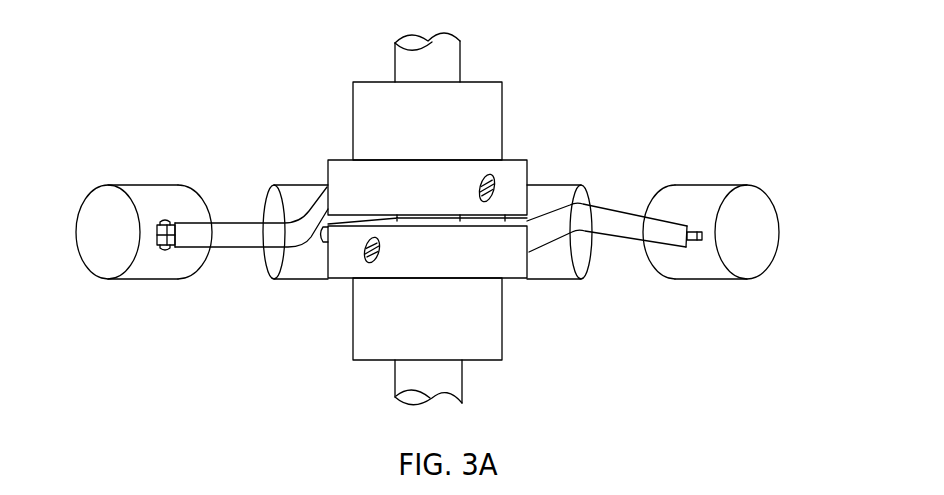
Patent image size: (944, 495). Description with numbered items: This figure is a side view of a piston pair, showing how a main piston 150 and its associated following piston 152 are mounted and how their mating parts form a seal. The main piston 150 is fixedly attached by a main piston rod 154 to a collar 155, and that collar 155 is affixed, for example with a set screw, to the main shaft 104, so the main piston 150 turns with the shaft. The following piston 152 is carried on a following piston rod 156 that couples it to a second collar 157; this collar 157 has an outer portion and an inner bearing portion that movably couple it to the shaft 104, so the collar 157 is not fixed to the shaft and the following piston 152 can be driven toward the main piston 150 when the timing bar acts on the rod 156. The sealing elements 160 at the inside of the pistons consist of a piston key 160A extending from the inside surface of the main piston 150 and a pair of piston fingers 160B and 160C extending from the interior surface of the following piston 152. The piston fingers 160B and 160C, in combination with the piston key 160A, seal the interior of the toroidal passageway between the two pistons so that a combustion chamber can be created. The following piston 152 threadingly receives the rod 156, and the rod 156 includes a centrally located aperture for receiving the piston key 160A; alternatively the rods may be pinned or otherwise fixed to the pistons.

The main shaft 104 is at (482, 41).
The main piston 150 is at (135, 188).
The following piston 152 is at (295, 185).
The main piston rod 154 is at (233, 248).
The collar 155 is at (513, 159).
The following piston rod 156 is at (618, 242).
The collar 157 is at (505, 318).
The fastener 160 is at (167, 250).
The piston key 160A is at (694, 243).
The piston finger 160B is at (160, 250).
The piston finger 160C is at (171, 221).